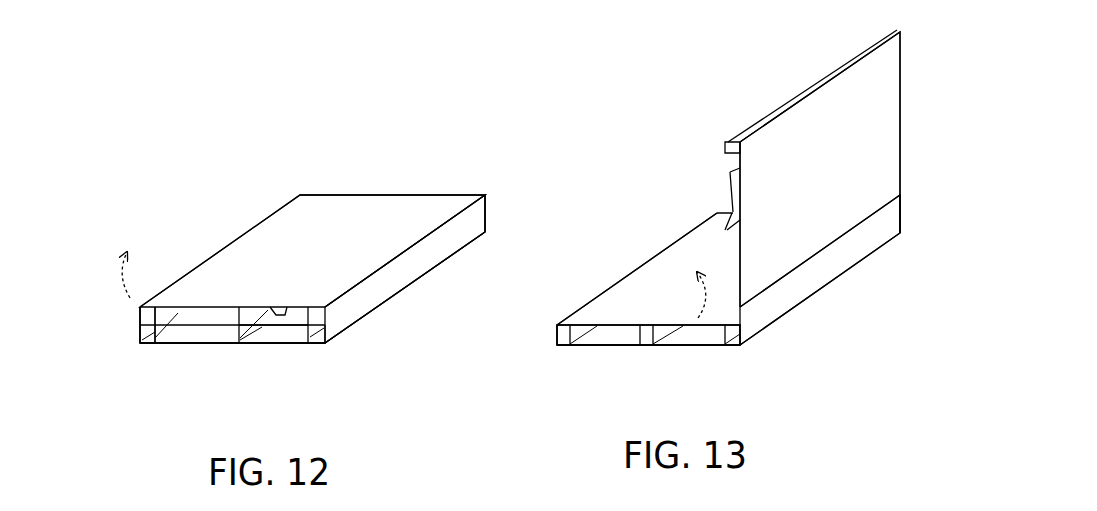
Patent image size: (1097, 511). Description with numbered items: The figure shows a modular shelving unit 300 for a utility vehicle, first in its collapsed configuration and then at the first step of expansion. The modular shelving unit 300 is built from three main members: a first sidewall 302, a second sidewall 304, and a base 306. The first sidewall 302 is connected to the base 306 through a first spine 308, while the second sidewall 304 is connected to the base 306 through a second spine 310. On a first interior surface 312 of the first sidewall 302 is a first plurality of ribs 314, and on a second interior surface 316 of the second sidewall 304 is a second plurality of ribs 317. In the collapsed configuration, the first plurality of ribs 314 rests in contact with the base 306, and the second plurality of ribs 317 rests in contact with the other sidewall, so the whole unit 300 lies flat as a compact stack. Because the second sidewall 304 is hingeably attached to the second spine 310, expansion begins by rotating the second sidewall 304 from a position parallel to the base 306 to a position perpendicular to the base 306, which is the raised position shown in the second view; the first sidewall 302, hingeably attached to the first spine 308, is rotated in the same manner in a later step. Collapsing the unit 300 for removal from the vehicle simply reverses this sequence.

In FIG. 12, the modular shelving unit 300 is at (203, 238).
In FIG. 13, the modular shelving unit 300 is at (657, 148).
In FIG. 12, the first sidewall 302 is at (200, 313).
In FIG. 13, the first sidewall 302 is at (623, 302).
In FIG. 12, the second sidewall 304 is at (357, 213).
In FIG. 13, the second sidewall 304 is at (855, 137).
In FIG. 12, the base 306 is at (263, 344).
In FIG. 13, the base 306 is at (598, 343).
In FIG. 12, the first spine 308 is at (142, 336).
In FIG. 13, the first spine 308 is at (557, 335).
In FIG. 12, the second spine 310 is at (380, 282).
In FIG. 13, the second spine 310 is at (817, 268).
In FIG. 12, the first interior surface 312 is at (277, 327).
In FIG. 12, the first plurality of ribs 314 is at (148, 342).
In FIG. 12, the second interior surface 316 is at (287, 310).
In FIG. 12, the second plurality of ribs 317 is at (147, 315).